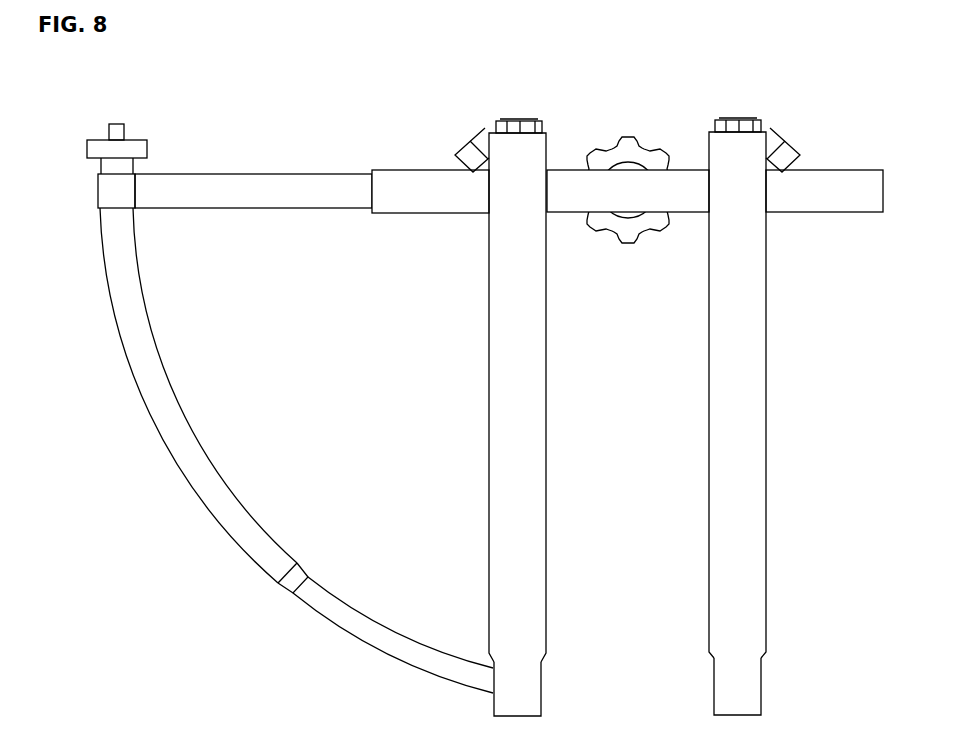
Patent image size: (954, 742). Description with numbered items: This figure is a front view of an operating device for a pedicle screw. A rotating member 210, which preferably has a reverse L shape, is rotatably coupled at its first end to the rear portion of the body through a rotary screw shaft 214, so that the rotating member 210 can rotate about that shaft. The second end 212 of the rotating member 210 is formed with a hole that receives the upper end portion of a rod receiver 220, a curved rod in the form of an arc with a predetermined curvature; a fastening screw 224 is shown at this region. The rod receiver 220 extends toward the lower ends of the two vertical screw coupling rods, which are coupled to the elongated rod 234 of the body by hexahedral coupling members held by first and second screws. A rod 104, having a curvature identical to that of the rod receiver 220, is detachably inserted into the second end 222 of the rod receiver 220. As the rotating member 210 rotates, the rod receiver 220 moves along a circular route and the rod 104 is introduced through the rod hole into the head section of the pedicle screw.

The rod 104 is at (367, 635).
The rotating member 210 is at (282, 190).
The second end of the rotating member 212 is at (103, 202).
The rotary screw shaft 214 is at (633, 150).
The rod receiver 220 is at (158, 408).
The second end of the rod receiver 222 is at (290, 588).
The fastening screw 224 is at (135, 152).
The elongated rod 234 is at (832, 210).